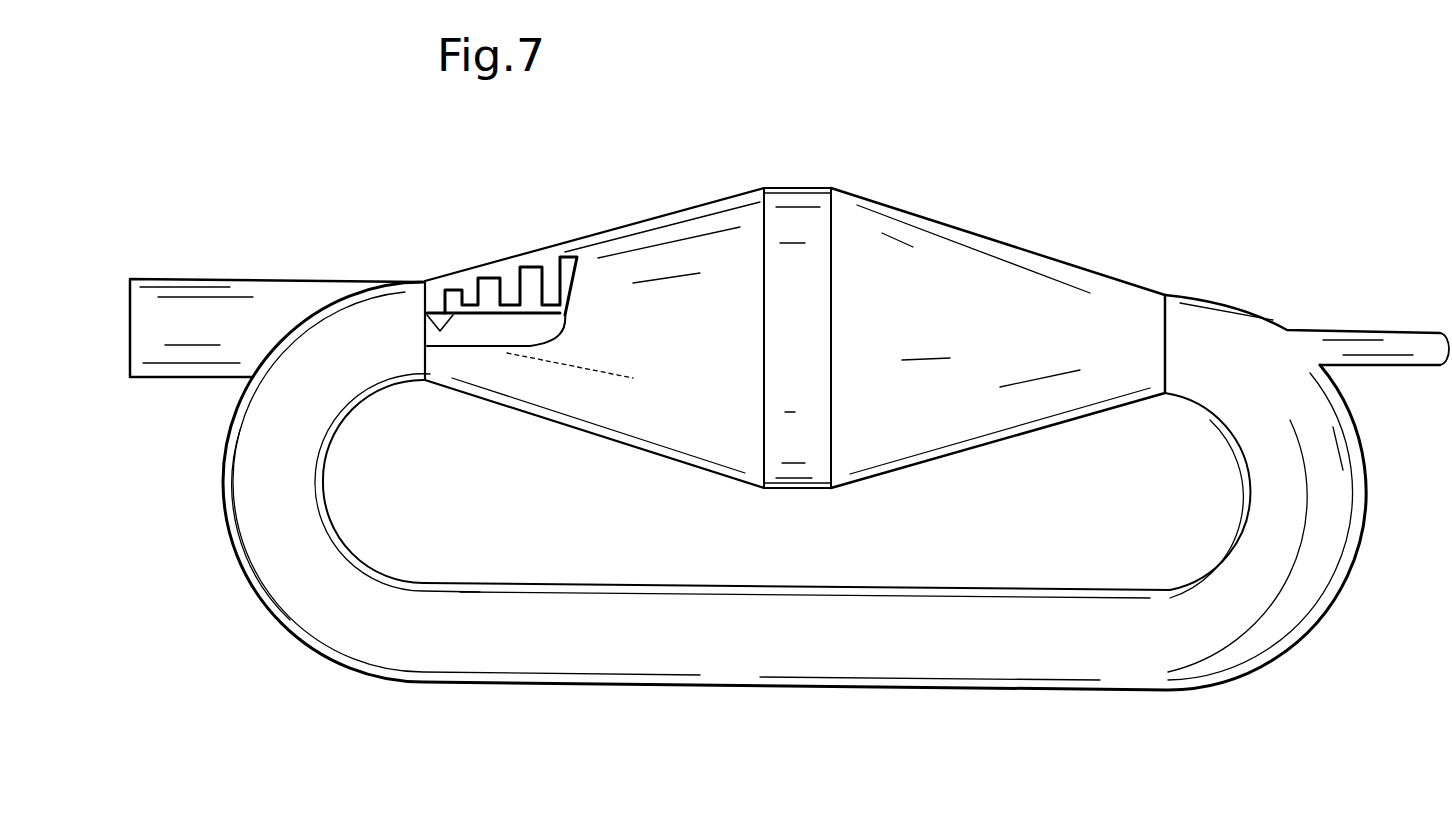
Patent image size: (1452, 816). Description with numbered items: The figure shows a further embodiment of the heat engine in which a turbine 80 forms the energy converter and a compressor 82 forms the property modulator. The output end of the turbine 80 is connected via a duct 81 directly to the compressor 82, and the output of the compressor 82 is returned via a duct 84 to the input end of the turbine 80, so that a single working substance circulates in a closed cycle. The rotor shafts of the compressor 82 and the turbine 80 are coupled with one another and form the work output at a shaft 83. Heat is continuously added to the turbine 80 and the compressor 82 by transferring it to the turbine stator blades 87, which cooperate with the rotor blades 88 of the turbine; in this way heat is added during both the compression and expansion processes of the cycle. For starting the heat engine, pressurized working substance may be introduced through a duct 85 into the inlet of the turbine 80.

The turbine 80 is at (624, 270).
The duct 81 is at (792, 213).
The compressor 82 is at (927, 248).
The shaft 83 is at (1360, 350).
The duct 84 is at (768, 648).
The duct 85 is at (199, 322).
The turbine stator blades 87 is at (555, 263).
The rotor blades 88 is at (427, 313).